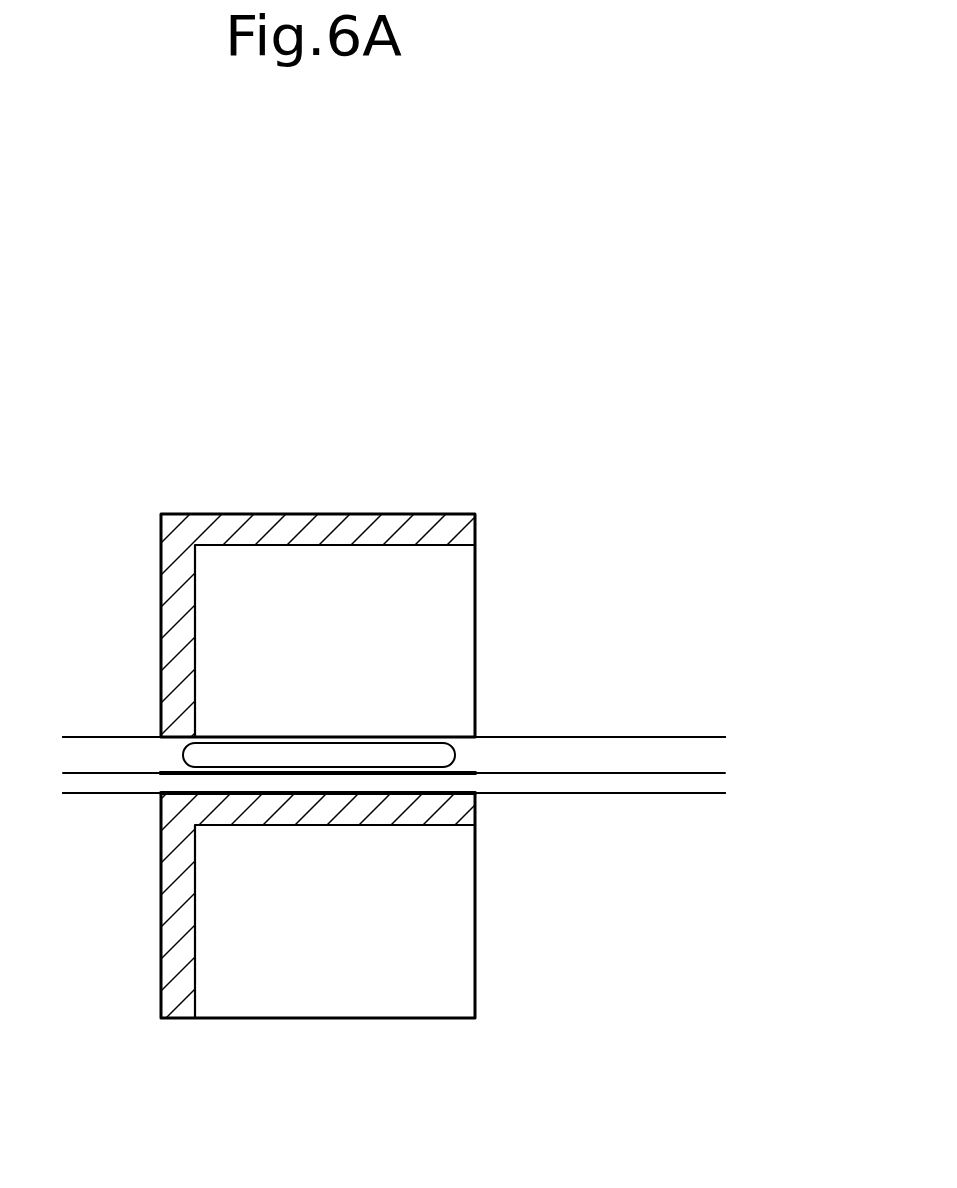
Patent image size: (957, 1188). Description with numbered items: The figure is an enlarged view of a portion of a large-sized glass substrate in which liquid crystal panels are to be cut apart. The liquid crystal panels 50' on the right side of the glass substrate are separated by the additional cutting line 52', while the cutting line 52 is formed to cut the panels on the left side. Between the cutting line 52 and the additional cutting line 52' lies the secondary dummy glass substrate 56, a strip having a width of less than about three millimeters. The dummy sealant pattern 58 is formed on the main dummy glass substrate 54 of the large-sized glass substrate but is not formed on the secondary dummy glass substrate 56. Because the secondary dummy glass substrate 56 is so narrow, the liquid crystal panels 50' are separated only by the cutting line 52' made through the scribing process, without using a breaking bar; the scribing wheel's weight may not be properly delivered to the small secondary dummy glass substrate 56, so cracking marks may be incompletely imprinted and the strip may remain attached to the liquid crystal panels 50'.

The liquid crystal panel 50' is at (318, 765).
The cutting line 52 is at (473, 747).
The additional cutting line 52' is at (452, 791).
The main dummy glass substrate 54 is at (465, 757).
The secondary dummy glass substrate 56 is at (453, 782).
The dummy sealant pattern 58 is at (165, 770).